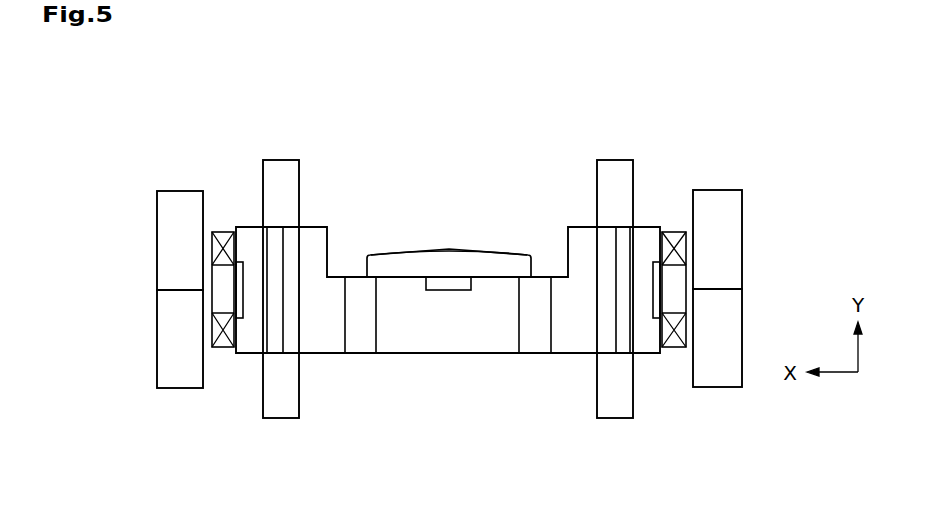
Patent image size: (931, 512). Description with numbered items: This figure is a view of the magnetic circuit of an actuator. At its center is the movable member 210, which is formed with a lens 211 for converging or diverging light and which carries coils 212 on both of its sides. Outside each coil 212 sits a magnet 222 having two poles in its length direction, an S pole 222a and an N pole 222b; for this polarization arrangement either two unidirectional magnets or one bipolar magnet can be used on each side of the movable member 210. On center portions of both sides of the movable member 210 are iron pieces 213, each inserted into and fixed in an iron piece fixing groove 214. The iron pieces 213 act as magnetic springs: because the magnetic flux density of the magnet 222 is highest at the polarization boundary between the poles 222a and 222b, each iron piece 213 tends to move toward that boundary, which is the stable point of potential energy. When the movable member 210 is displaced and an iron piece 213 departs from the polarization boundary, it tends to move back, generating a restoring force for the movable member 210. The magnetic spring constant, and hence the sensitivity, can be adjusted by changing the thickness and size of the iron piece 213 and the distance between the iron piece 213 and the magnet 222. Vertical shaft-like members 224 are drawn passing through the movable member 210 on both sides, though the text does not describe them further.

The movable member 210 is at (570, 339).
The lens 211 is at (468, 258).
The coils 212 is at (223, 238).
The iron pieces 213 is at (239, 318).
The iron piece fixing grooves 214 is at (243, 308).
The magnet 222 is at (452, 273).
The S pole of the magnet 222a is at (160, 240).
The N pole of the magnet 222b is at (160, 325).
The guide shaft 224 is at (287, 182).